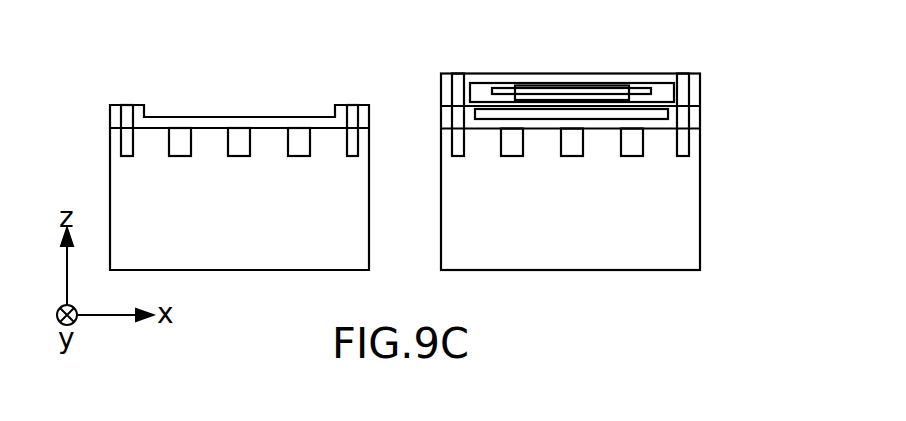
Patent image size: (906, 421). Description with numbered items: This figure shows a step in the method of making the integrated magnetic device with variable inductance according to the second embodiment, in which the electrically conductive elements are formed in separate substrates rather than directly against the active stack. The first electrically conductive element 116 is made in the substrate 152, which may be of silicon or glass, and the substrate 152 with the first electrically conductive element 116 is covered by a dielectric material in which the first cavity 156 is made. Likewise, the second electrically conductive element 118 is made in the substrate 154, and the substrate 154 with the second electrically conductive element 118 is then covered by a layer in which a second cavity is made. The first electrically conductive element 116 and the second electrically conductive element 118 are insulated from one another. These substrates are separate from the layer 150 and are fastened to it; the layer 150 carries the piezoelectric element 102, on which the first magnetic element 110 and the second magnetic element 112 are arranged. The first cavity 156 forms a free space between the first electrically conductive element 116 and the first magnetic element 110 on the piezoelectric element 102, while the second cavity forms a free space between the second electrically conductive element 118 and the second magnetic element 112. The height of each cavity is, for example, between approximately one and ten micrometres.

The piezoelectric element 102 is at (629, 91).
The first magnetic element 110 is at (548, 96).
The second magnetic element 112 is at (558, 84).
The first electrically conductive element 116 is at (568, 150).
The second electrically conductive element 118 is at (238, 138).
The layer 150 is at (695, 90).
The substrate 152 is at (695, 235).
The substrate 154 is at (117, 165).
The first cavity 156 is at (663, 110).